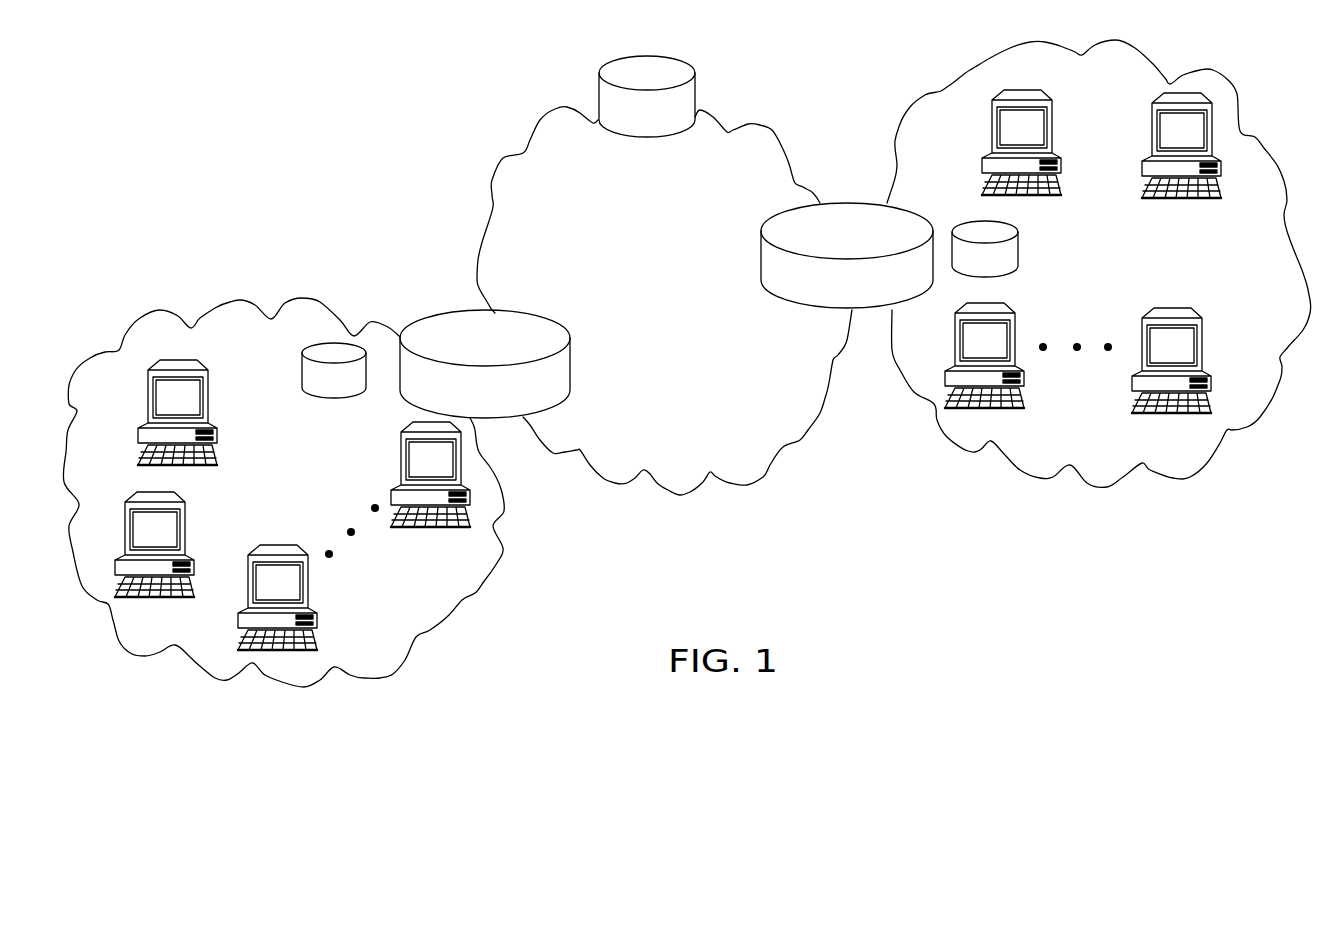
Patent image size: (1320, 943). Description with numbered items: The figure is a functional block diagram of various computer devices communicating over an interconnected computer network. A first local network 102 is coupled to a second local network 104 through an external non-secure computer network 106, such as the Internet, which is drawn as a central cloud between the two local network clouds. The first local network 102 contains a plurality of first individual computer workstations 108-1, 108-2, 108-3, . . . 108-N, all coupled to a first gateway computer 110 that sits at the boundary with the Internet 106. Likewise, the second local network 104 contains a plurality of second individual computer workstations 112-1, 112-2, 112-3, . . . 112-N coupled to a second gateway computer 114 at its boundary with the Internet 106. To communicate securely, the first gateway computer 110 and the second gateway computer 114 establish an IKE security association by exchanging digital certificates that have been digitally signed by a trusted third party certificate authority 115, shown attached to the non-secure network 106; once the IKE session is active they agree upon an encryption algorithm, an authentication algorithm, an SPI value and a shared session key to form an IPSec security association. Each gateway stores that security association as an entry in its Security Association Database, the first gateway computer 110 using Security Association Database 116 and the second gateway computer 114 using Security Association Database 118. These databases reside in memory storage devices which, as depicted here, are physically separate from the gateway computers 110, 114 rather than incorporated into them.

The first local network 102 is at (116, 478).
The second local network 104 is at (1112, 452).
The external non-secure computer network 106 is at (670, 312).
The first individual computer workstation 108-1 is at (190, 389).
The first individual computer workstation 108-2 is at (153, 523).
The first individual computer workstation 108-3 is at (282, 582).
The first individual computer workstation 108-N is at (425, 461).
The first gateway computer 110 is at (455, 335).
The second individual computer workstation 112-1 is at (1182, 128).
The second individual computer workstation 112-2 is at (1025, 121).
The second individual computer workstation 112-3 is at (988, 345).
The second individual computer workstation 112-N is at (1173, 342).
The second gateway computer 114 is at (842, 228).
The trusted third party certificate authority 115 is at (658, 68).
The Security Association Database 116 is at (328, 354).
The Security Association Database 118 is at (991, 234).